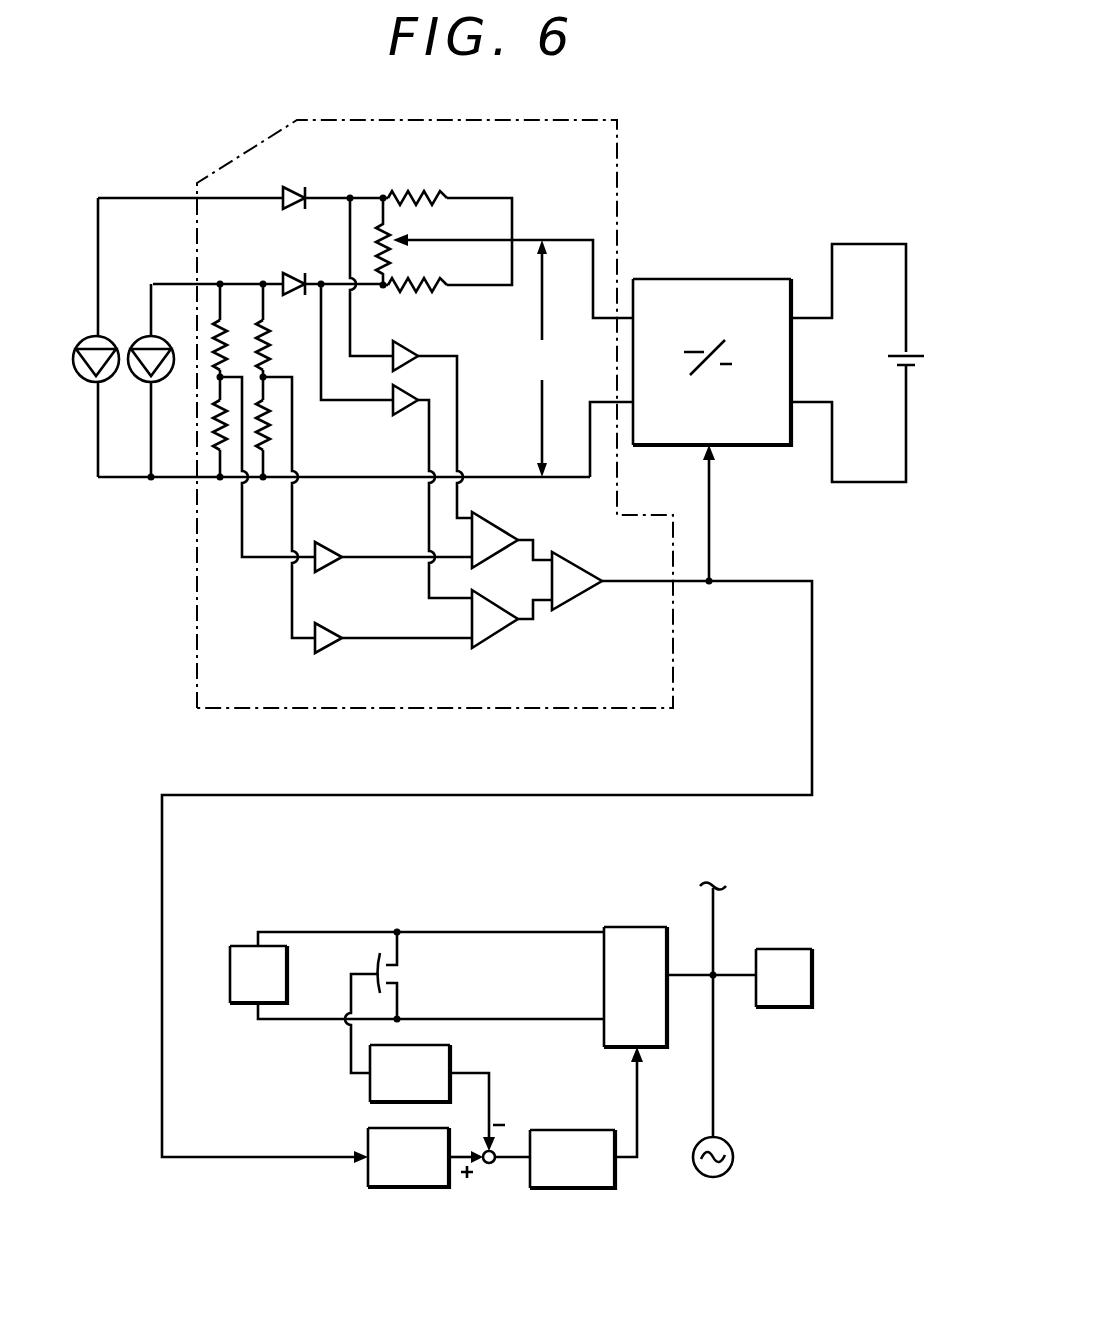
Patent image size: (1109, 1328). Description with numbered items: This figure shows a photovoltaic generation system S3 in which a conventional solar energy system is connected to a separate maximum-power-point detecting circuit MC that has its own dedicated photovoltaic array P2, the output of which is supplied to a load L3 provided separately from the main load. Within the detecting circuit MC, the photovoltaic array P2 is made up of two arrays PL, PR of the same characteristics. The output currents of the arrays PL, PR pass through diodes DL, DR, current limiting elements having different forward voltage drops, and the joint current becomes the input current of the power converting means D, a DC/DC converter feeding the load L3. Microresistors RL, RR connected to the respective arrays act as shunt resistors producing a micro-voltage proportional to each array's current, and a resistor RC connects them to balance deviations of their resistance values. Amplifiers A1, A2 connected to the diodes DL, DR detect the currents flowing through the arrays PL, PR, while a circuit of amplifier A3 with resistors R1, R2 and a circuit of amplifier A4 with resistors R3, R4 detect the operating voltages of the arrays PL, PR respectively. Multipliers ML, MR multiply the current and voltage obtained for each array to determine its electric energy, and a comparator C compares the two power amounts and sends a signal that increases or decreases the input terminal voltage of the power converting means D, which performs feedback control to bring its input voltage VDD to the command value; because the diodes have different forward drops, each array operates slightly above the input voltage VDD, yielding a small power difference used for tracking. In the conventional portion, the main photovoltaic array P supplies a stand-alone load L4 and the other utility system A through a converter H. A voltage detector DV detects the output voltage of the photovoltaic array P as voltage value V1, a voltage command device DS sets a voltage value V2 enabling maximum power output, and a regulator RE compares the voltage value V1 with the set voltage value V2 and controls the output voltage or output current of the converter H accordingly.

The photovoltaic array P2 is at (186, 238).
The array PL is at (106, 334).
The array PR is at (141, 334).
The resistor R1 is at (212, 332).
The resistor R2 is at (213, 432).
The resistor R3 is at (257, 326).
The resistor R4 is at (268, 418).
The diode DL is at (297, 192).
The diode DR is at (298, 280).
The microresistor RL is at (431, 193).
The resistor RC is at (395, 252).
The microresistor RR is at (426, 294).
The amplifier A1 is at (404, 345).
The amplifier A2 is at (401, 412).
The amplifier A3 is at (328, 553).
The amplifier A4 is at (328, 648).
The multiplier ML is at (493, 538).
The multiplier MR is at (495, 626).
The comparator C is at (576, 581).
The detecting circuit MC is at (673, 660).
The photovoltaic generation system S3 is at (657, 200).
The power converting means D is at (718, 292).
The load L3 is at (897, 353).
The input voltage VDD is at (546, 358).
The converter H is at (625, 938).
The load L4 is at (778, 960).
The photovoltaic array P is at (240, 966).
The voltage detector DV is at (440, 1060).
The voltage value V1 is at (472, 1112).
The set voltage value V2 is at (466, 1147).
The voltage command device DS is at (400, 1178).
The regulator RE is at (568, 1176).
The utility system A is at (722, 1147).